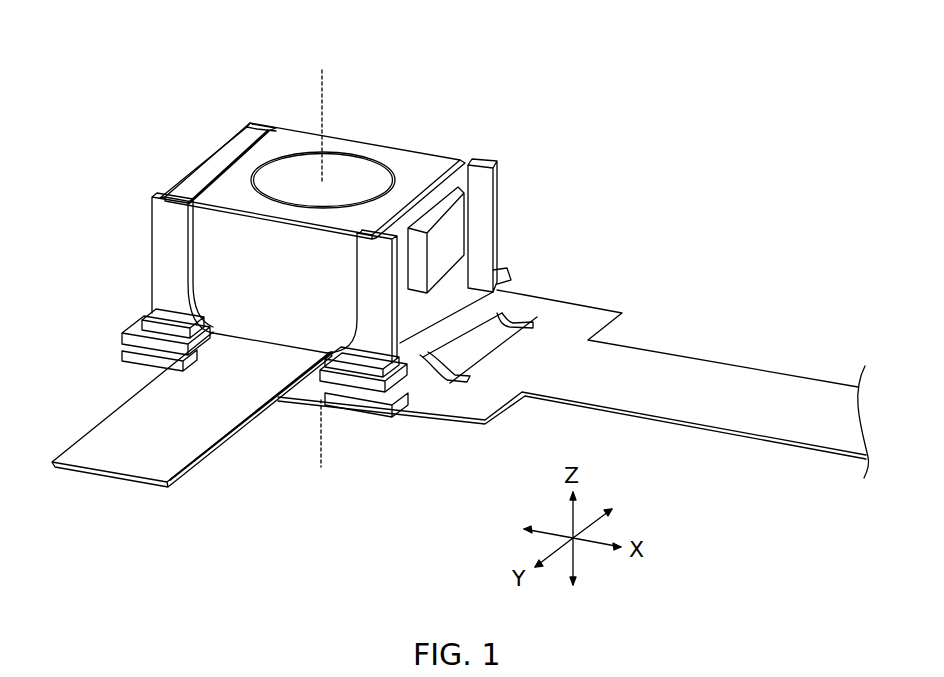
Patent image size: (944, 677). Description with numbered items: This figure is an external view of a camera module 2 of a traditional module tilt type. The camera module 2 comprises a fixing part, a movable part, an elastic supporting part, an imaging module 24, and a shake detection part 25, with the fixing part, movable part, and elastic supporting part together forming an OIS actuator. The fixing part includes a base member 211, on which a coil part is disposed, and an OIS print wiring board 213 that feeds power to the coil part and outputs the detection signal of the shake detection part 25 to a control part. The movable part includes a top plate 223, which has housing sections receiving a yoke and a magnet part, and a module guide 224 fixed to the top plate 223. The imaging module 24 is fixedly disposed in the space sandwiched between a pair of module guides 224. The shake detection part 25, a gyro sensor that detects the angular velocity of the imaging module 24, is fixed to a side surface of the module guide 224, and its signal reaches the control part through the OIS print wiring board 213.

The camera module 2 is at (514, 132).
The imaging module 24 is at (330, 141).
The module guide 224 is at (488, 186).
The shake detection part 25 is at (463, 247).
The top plate 223 is at (523, 283).
The OIS print wiring board 213 is at (668, 362).
The base member 211 is at (120, 364).